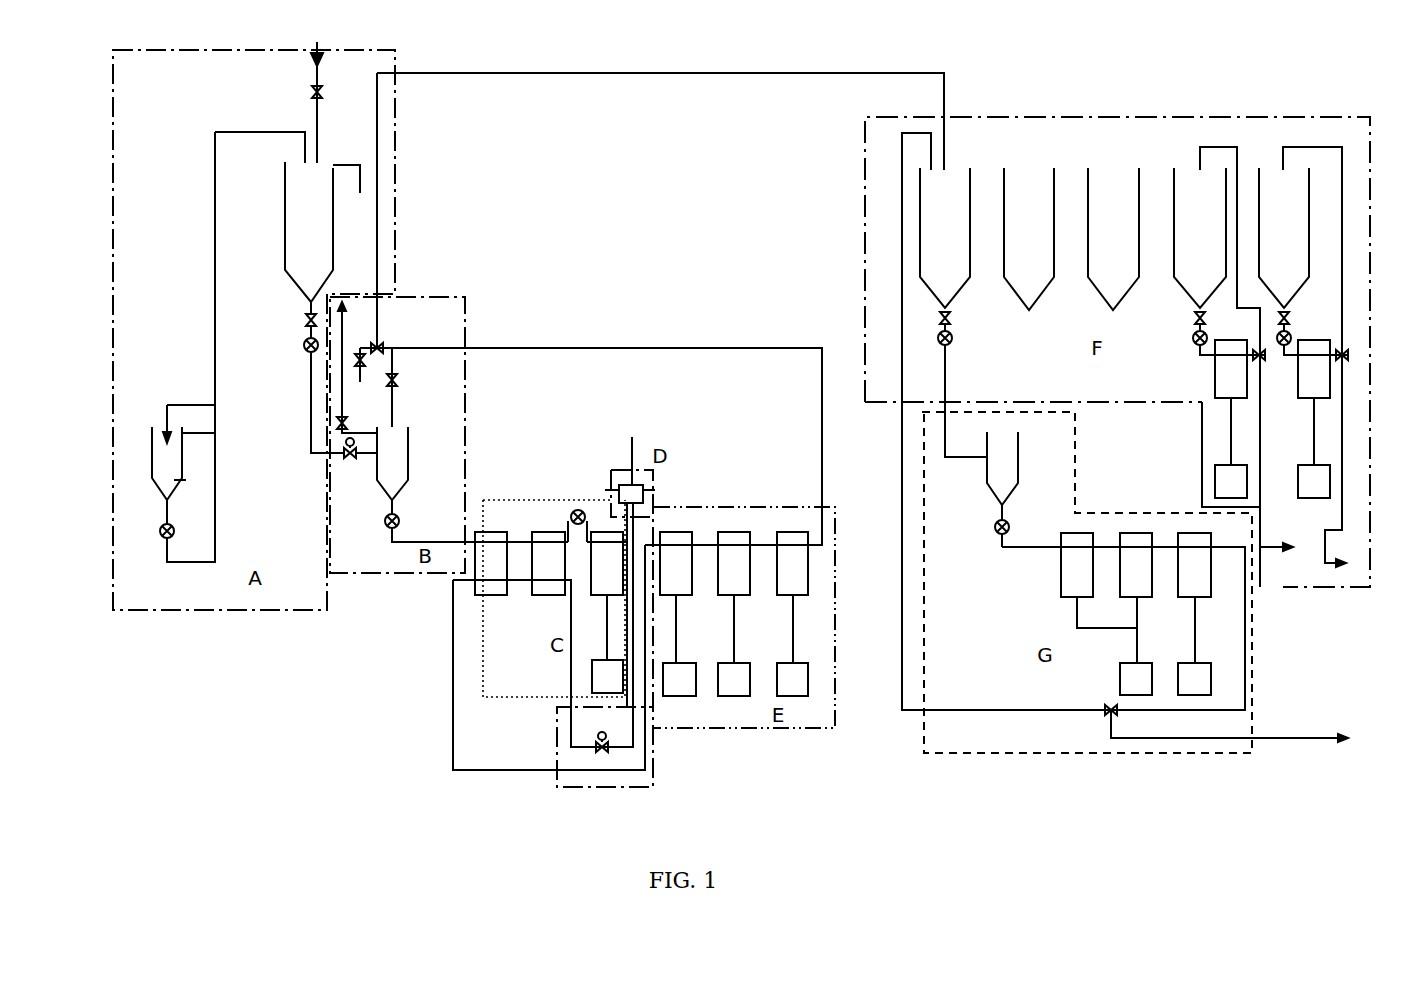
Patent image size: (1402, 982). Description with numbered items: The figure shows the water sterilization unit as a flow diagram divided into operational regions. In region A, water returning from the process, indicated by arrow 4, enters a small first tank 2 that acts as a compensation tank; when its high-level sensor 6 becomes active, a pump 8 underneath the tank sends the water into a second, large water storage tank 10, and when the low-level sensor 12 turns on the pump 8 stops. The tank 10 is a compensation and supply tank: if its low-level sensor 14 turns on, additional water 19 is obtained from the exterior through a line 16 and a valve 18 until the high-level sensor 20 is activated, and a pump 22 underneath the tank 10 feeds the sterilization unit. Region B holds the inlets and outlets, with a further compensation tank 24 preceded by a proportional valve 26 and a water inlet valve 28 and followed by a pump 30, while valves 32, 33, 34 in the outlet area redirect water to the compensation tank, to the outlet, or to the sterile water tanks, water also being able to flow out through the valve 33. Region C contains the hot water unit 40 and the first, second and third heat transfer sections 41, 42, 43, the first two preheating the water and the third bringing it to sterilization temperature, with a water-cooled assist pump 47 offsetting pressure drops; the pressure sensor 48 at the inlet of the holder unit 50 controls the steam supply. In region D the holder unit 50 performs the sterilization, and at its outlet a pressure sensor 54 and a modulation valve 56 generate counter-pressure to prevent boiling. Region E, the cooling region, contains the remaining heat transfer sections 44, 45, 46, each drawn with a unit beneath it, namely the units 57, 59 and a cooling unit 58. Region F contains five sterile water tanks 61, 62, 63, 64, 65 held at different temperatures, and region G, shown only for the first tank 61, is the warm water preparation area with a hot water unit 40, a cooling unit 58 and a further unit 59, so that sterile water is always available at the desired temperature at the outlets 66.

The first tank 2 is at (184, 458).
The arrow 4 is at (215, 404).
The high-level sensor 6 is at (215, 432).
The pump 8 is at (163, 537).
The second water storage tank 10 is at (335, 222).
The low-level sensor 12 is at (182, 482).
The low-level sensor 14 is at (335, 275).
The line 16 is at (306, 128).
The valve 18 is at (322, 90).
The additional water 19 is at (312, 52).
The high-level sensor 20 is at (345, 170).
The pump 22 is at (298, 342).
The further compensation tank 24 is at (410, 457).
The proportional valve 26 is at (350, 460).
The water inlet valve 28 is at (350, 425).
The pump 30 is at (400, 518).
The valve 32 is at (398, 380).
The valve 33 is at (385, 343).
The valve 34 is at (392, 363).
The hot water unit 40 is at (592, 678).
The first section 41 is at (485, 588).
The second section 42 is at (552, 594).
The third section 43 is at (603, 594).
The heat transfer section 44 is at (685, 594).
The heat transfer section 45 is at (745, 594).
The heat transfer section 46 is at (803, 594).
The water-cooled assist pump 47 is at (573, 510).
The pressure sensor 48 is at (612, 485).
The holder unit 50 is at (632, 437).
The pressure sensor 54 is at (660, 489).
The valve 56 is at (600, 757).
The unit 57 is at (685, 696).
The cooling unit 58 is at (739, 696).
The unit 59 is at (803, 696).
The first tank 61 is at (953, 312).
The second tank 62 is at (1029, 239).
The third tank 63 is at (1113, 239).
The fourth tank 64 is at (1219, 367).
The fifth tank 65 is at (1303, 357).
The outlets 66 is at (1277, 552).